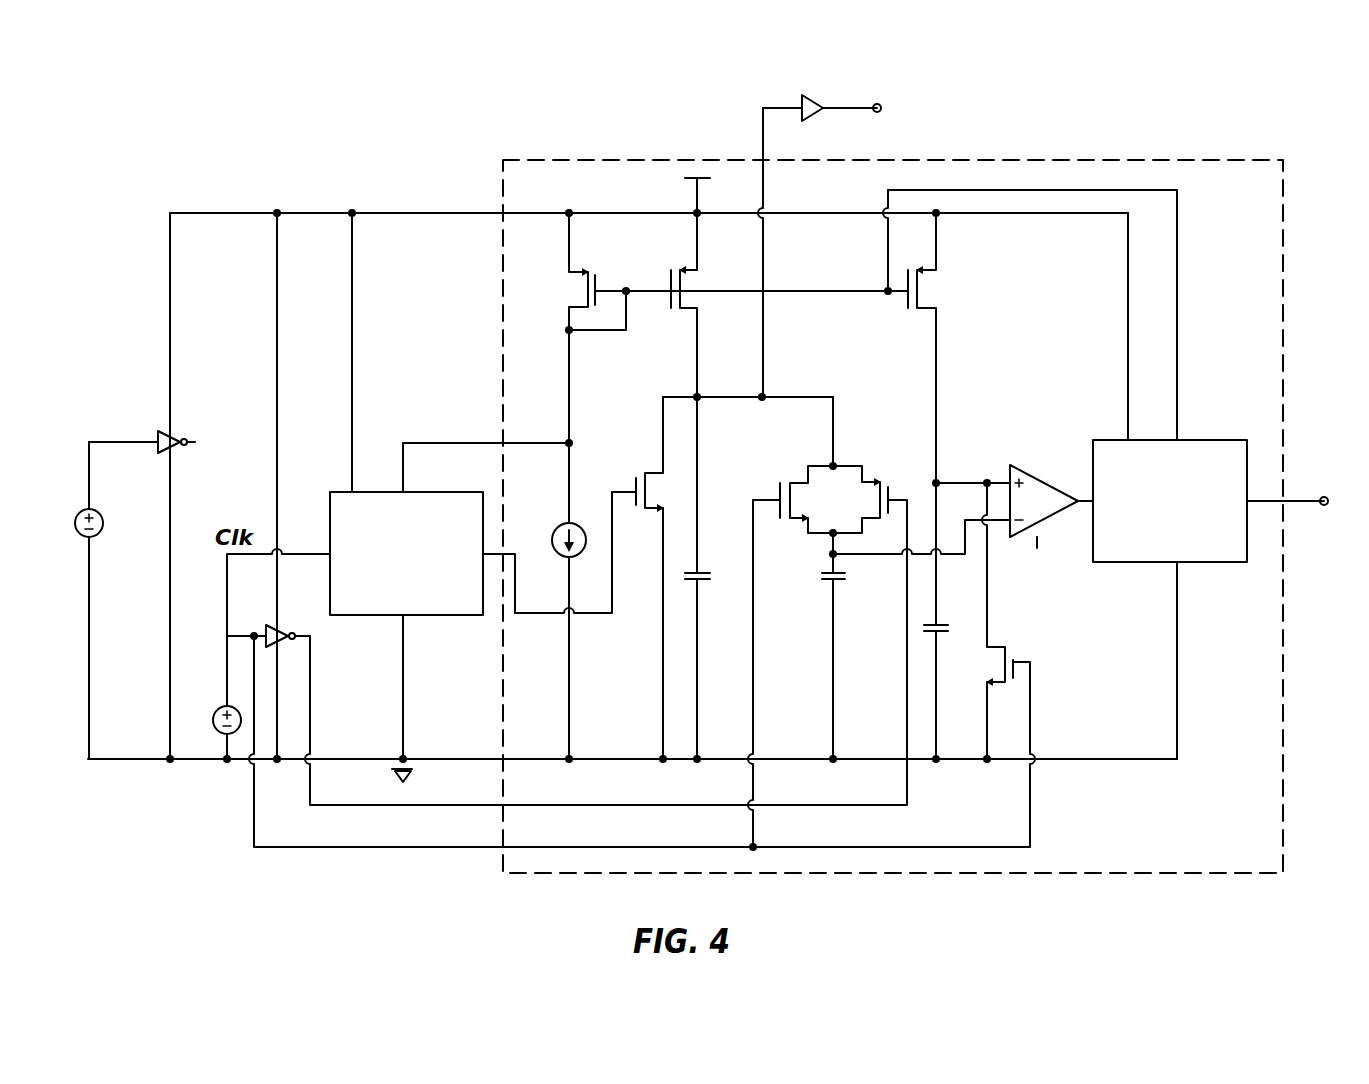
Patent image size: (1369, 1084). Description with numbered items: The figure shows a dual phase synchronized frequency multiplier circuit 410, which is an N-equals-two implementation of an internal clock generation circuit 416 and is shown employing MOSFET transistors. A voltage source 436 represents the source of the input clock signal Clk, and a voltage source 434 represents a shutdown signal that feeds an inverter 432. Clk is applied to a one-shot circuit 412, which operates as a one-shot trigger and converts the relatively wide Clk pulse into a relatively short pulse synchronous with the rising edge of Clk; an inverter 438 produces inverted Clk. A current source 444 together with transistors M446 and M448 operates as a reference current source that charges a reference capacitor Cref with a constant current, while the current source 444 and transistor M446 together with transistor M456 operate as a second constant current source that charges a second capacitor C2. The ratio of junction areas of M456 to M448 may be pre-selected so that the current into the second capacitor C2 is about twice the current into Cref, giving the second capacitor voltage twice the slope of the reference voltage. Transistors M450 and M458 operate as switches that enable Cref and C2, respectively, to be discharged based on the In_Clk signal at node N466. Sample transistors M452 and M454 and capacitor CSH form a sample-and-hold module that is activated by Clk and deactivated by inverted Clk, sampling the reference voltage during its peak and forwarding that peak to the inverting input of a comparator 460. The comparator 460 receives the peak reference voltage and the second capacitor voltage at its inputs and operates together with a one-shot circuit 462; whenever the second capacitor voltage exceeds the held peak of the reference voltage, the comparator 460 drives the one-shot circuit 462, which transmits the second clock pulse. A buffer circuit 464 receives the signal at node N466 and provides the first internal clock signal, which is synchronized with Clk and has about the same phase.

The dual phase synchronized frequency multiplier circuit 410 is at (934, 495).
The one-shot circuit 412 is at (449, 617).
The internal clock generation circuit 416 is at (1255, 874).
The inverter 432 is at (160, 434).
The voltage source 434 is at (82, 538).
The voltage source 436 is at (222, 706).
The inverter 438 is at (286, 622).
The current source 444 is at (562, 526).
The comparator 460 is at (1048, 470).
The one-shot circuit 462 is at (1212, 565).
The buffer circuit 464 is at (818, 115).
The transistor M446 is at (582, 307).
The transistor M448 is at (672, 283).
The transistor M450 is at (657, 472).
The sample transistor M452 is at (800, 476).
The sample transistor M454 is at (878, 480).
The transistor M456 is at (936, 307).
The transistor M458 is at (995, 648).
The node N466 is at (760, 394).
The reference capacitor Cref is at (716, 668).
The sample-and-hold capacitor CSH is at (849, 648).
The second capacitor C2 is at (947, 621).